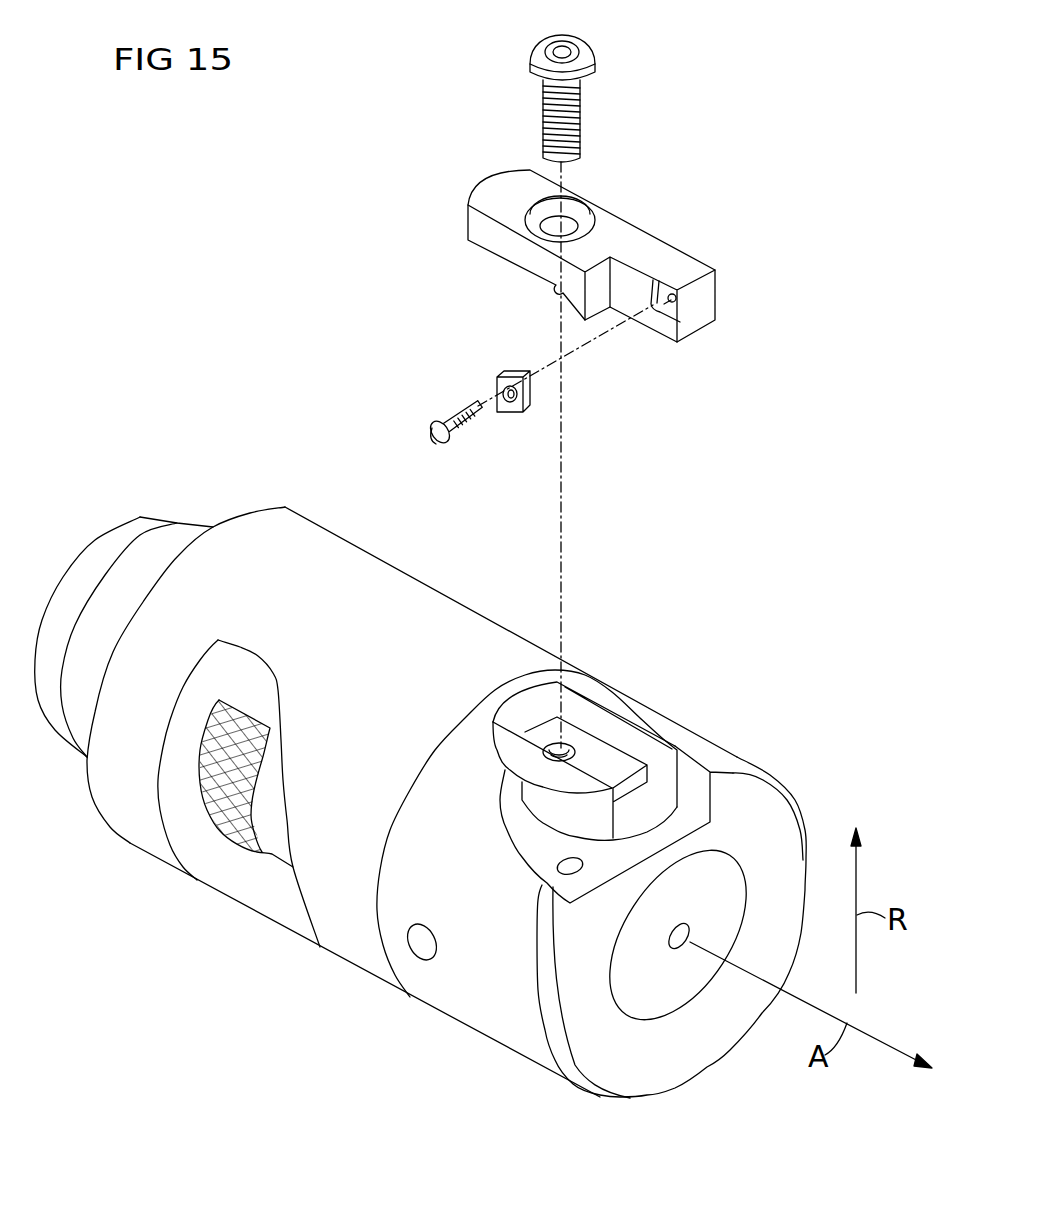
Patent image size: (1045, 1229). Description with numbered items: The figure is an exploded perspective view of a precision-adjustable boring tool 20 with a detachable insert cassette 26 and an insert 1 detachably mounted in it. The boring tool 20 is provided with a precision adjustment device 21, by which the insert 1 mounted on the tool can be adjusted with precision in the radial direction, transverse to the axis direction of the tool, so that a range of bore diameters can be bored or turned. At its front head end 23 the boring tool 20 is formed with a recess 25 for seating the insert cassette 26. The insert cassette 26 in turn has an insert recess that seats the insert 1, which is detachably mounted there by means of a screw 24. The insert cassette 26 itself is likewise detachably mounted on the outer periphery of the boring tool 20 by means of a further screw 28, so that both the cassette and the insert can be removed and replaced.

The insert 1 is at (497, 380).
The boring tool 20 is at (440, 1018).
The precision adjustment device 21 is at (213, 827).
The front head end 23 is at (708, 752).
The screw 24 is at (433, 440).
The recess 25 is at (603, 727).
The insert cassette 26 is at (612, 228).
The screw 28 is at (590, 55).